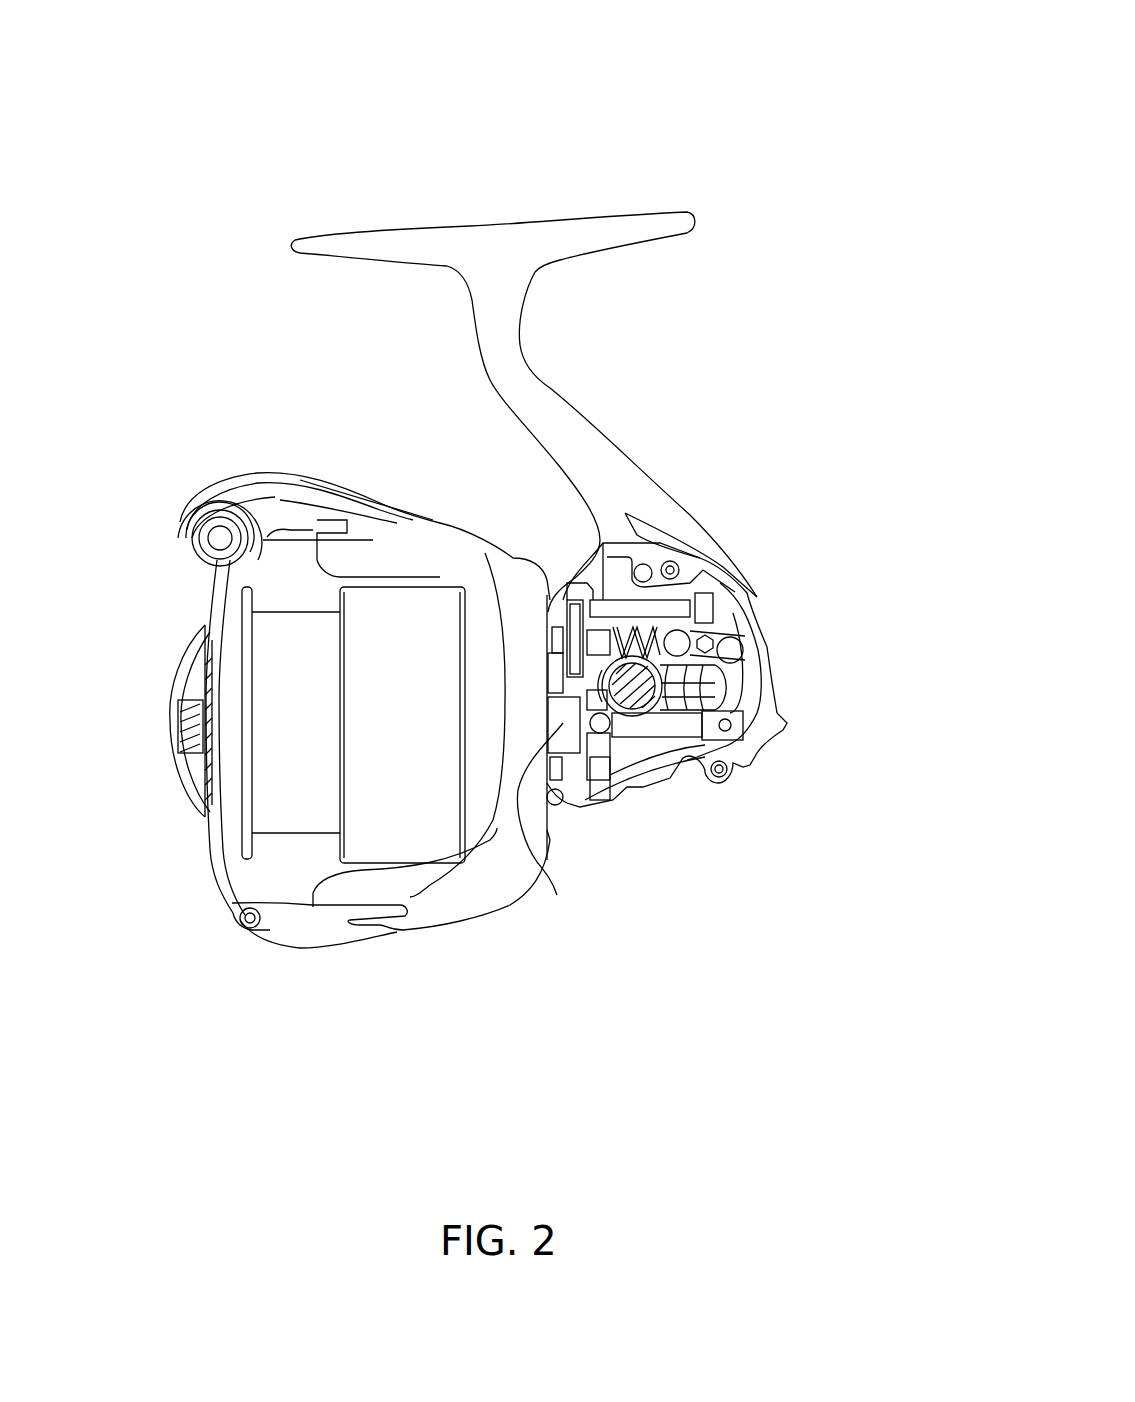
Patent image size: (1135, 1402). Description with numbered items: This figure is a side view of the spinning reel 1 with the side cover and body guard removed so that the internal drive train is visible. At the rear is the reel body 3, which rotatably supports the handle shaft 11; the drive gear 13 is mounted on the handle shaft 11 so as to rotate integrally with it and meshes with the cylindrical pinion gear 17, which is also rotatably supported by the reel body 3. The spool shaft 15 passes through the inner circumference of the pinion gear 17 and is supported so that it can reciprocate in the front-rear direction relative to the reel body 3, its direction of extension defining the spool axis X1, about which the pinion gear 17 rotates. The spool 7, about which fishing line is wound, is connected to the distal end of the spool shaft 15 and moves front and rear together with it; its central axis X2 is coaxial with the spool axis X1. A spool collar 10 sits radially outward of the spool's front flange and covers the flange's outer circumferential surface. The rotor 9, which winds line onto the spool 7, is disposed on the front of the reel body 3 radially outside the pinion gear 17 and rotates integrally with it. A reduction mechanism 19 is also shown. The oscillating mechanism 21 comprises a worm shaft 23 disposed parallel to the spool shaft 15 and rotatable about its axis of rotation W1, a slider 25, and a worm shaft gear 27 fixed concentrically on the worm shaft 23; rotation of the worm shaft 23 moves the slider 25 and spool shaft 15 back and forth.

The spinning reel 1 is at (687, 122).
The reel body 3 is at (557, 367).
The spool 7 is at (300, 573).
The rotor 9 is at (276, 963).
The spool collar 10 is at (230, 828).
The handle shaft 11 is at (673, 740).
The drive gear 13 is at (628, 810).
The spool shaft 15 is at (677, 770).
The pinion gear 17 is at (547, 845).
The reduction mechanism 19 is at (590, 810).
The oscillating mechanism 21 is at (775, 382).
The worm shaft 23 is at (633, 625).
The slider 25 is at (748, 592).
The worm shaft gear 27 is at (570, 592).
The spool axis X1 is at (795, 728).
The central axis X2 is at (160, 720).
The axis of rotation W1 is at (762, 643).